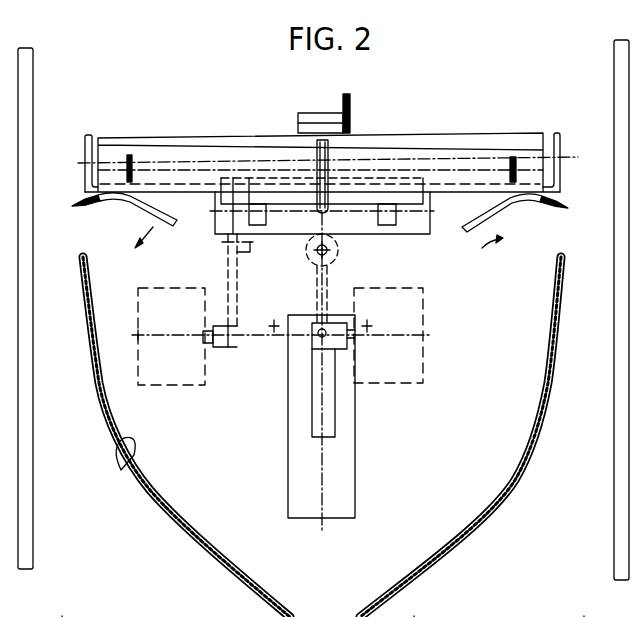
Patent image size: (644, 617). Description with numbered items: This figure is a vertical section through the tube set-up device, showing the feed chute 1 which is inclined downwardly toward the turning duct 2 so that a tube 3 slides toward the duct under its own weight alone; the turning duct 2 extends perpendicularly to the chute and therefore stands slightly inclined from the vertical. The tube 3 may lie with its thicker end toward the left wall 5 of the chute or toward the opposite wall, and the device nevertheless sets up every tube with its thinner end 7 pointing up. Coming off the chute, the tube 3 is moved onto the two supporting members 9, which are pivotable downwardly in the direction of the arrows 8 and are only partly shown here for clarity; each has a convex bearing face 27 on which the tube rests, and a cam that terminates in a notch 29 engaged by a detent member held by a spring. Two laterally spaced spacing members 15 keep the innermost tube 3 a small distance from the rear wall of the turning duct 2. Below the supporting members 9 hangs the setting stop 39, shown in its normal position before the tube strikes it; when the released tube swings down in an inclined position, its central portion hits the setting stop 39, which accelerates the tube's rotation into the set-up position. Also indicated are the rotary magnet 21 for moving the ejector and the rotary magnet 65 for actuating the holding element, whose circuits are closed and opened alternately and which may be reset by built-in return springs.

The feed chute 1 is at (92, 138).
The turning duct 2 is at (127, 467).
The tube 3 is at (183, 148).
The left wall 5 is at (62, 607).
The thinner end 7 is at (585, 613).
The arrows 8 is at (319, 254).
The supporting members 9 is at (112, 199).
The spacing members 15 is at (132, 157).
The rotary magnet 21 is at (412, 363).
The convex bearing face 27 is at (175, 225).
The notch 29 is at (418, 614).
The setting stop 39 is at (328, 283).
The rotary magnet 65 is at (178, 376).